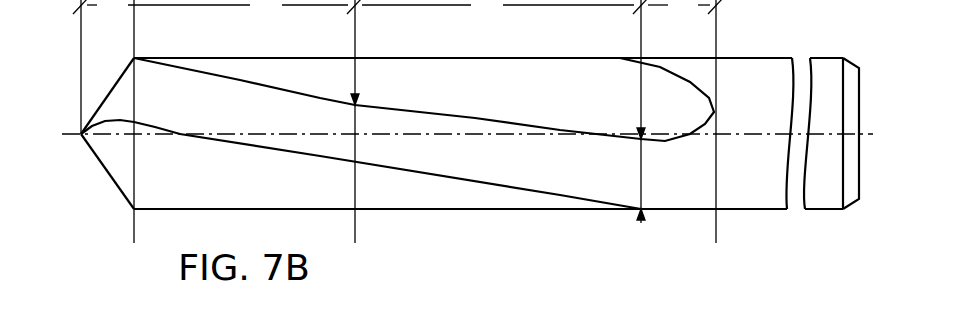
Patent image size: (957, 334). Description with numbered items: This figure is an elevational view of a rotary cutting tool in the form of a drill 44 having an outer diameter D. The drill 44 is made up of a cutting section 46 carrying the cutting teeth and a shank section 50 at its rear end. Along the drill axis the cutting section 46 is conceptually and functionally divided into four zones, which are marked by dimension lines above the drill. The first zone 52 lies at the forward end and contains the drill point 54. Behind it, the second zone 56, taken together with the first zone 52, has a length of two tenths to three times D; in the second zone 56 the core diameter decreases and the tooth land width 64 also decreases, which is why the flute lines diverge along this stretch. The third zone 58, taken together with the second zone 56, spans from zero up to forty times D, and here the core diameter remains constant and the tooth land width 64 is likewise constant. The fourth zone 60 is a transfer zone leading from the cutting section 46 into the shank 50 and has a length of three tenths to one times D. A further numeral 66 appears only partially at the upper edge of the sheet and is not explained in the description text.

The drill 44 is at (748, 46).
The cutting section 46 is at (544, 58).
The shank section 50 is at (830, 204).
The first zone 52 is at (127, 18).
The drill point 54 is at (82, 137).
The second zone 56 is at (281, 18).
The third zone 58 is at (502, 18).
The fourth zone 60 is at (698, 18).
The tooth land width 64 is at (497, 141).
The end portion 66 is at (827, 4).